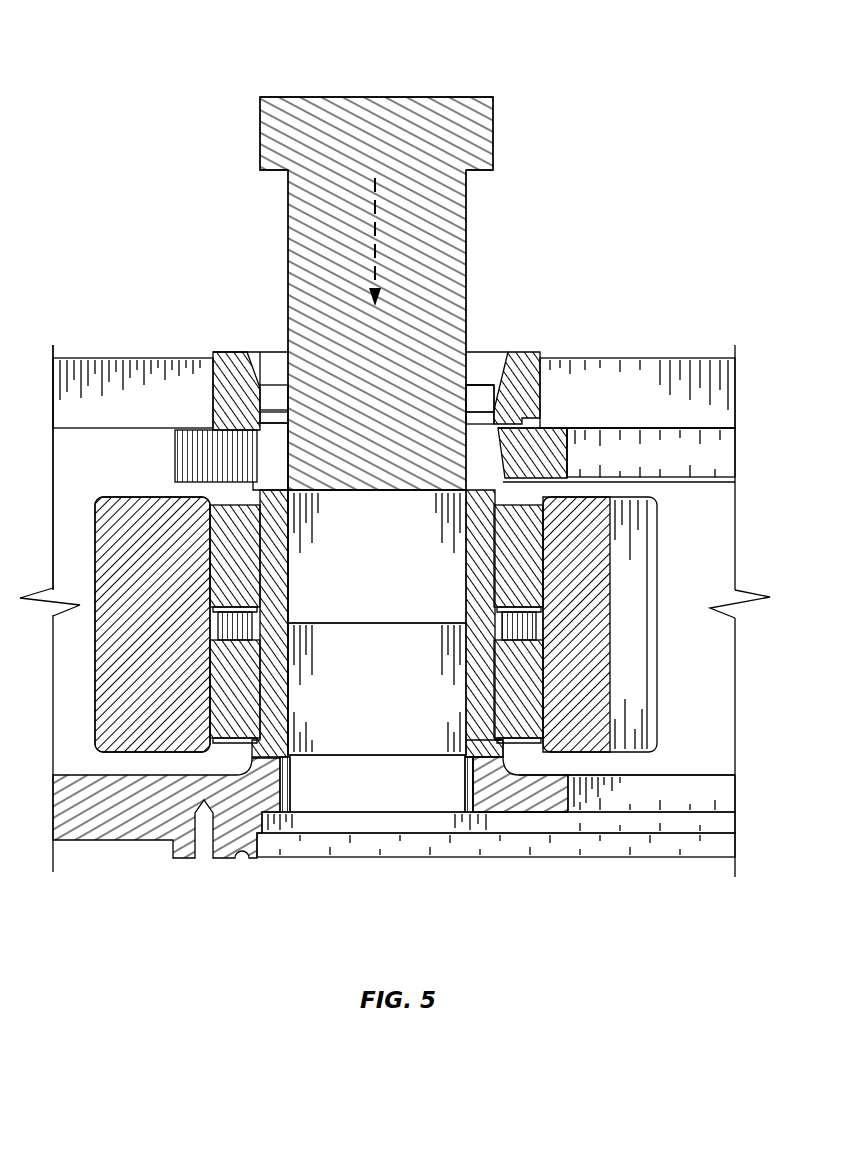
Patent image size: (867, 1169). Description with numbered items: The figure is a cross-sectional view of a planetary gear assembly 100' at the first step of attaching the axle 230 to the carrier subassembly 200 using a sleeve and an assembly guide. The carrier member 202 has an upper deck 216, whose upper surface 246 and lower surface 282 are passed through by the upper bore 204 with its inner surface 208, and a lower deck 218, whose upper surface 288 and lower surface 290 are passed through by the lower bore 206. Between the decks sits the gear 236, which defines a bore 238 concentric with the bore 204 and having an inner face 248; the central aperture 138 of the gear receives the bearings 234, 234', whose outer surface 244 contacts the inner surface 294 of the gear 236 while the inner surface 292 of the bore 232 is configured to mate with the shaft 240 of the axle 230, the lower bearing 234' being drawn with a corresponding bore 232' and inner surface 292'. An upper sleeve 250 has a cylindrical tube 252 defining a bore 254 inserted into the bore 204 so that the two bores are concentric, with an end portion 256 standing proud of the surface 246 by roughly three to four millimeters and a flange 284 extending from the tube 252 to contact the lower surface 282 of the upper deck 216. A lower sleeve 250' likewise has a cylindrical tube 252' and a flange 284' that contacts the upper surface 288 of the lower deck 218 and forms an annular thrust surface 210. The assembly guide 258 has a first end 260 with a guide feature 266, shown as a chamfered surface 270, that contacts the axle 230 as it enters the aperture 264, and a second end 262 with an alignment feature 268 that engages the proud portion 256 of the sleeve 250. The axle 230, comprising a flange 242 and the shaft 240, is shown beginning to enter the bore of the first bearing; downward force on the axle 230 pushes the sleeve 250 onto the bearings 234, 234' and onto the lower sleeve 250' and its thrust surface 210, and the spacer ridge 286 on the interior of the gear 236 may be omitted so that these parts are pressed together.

The planetary gear assembly 100' is at (406, 405).
The central aperture 138 is at (545, 718).
The carrier subassembly 200 is at (704, 352).
The carrier member 202 is at (724, 406).
The upper bore 204 is at (502, 458).
The lower bore 206 is at (287, 800).
The inner surface 208 is at (589, 436).
The annular thrust surface 210 is at (494, 764).
The upper deck 216 is at (703, 456).
The lower deck 218 is at (728, 794).
The axle 230 is at (478, 42).
The bore 232 is at (377, 556).
The lower bushing half 232' is at (377, 689).
The bearing 234 is at (190, 556).
The bearing 234' is at (190, 689).
The gear 236 is at (640, 666).
The bore 238 is at (530, 612).
The shaft 240 is at (466, 247).
The flange 242 is at (493, 130).
The outer surface 244 is at (207, 547).
The upper surface 246 is at (672, 422).
The inner face 248 is at (452, 623).
The sleeve 250 is at (216, 456).
The lower sleeve 250' is at (520, 828).
The cylindrical tube 252 is at (191, 374).
The cylindrical tube 252' is at (495, 828).
The bore 254 is at (283, 470).
The end portion 256 is at (490, 382).
The assembly guide 258 is at (522, 352).
The first end 260 is at (232, 352).
The second end 262 is at (506, 412).
The aperture 264 is at (289, 393).
The guide feature 266 is at (541, 360).
The alignment feature 268 is at (250, 420).
The chamfered surface 270 is at (552, 365).
The lower surface 282 is at (683, 483).
The flange 284 is at (550, 553).
The flange 284' is at (376, 783).
The spacer ridge 286 is at (550, 689).
The upper surface 288 is at (713, 776).
The lower surface 290 is at (703, 813).
The inner surface 292 is at (328, 556).
The lower interface surface 292' is at (331, 689).
The inner surface 294 is at (152, 624).